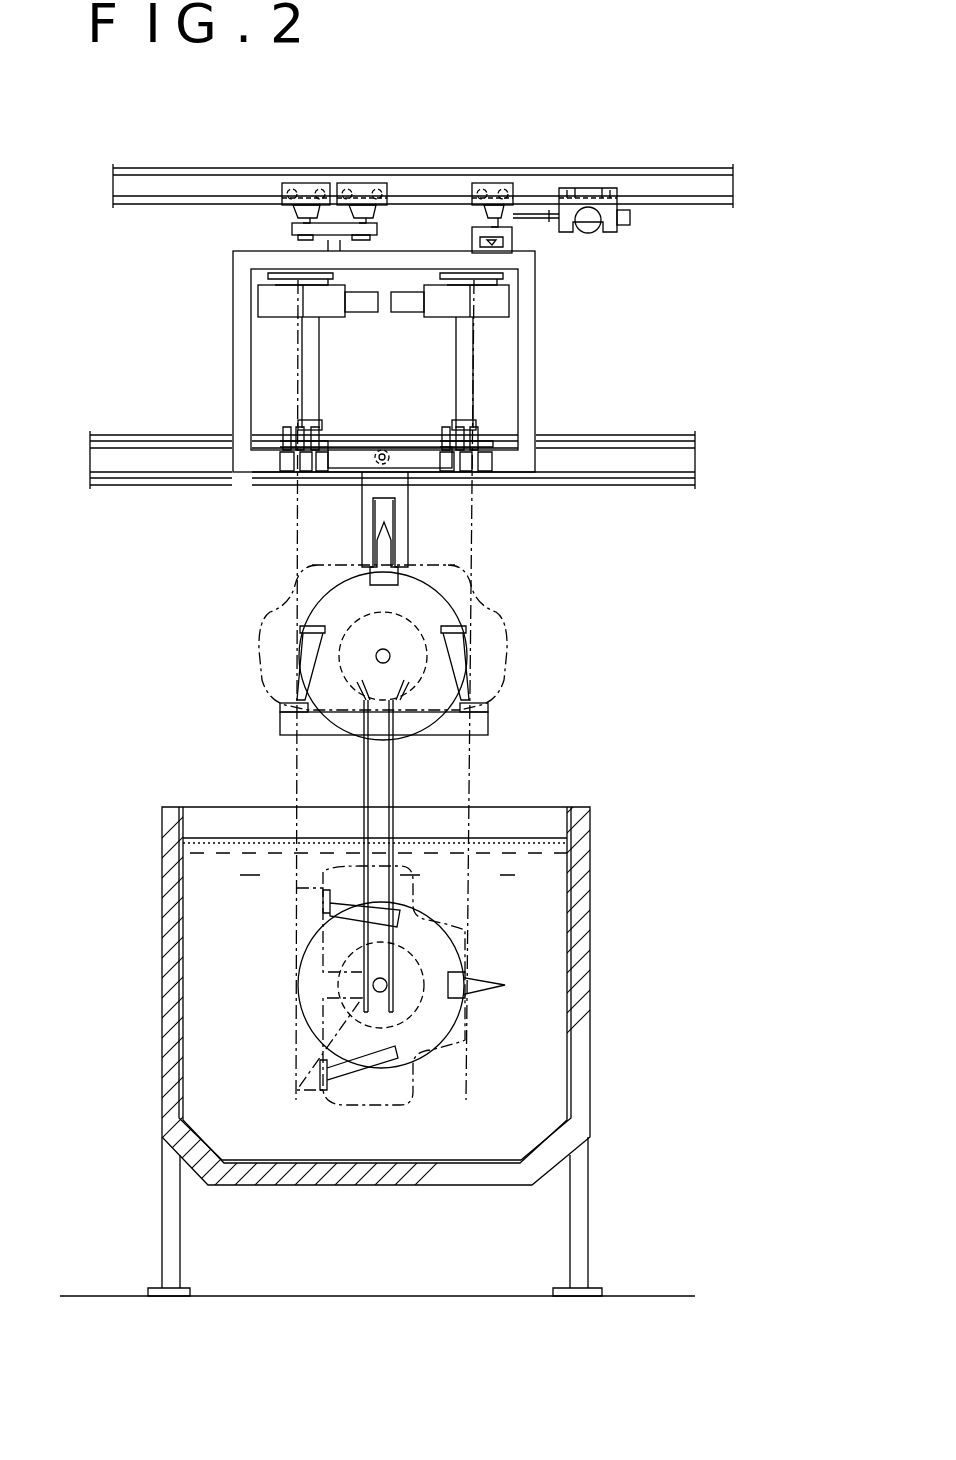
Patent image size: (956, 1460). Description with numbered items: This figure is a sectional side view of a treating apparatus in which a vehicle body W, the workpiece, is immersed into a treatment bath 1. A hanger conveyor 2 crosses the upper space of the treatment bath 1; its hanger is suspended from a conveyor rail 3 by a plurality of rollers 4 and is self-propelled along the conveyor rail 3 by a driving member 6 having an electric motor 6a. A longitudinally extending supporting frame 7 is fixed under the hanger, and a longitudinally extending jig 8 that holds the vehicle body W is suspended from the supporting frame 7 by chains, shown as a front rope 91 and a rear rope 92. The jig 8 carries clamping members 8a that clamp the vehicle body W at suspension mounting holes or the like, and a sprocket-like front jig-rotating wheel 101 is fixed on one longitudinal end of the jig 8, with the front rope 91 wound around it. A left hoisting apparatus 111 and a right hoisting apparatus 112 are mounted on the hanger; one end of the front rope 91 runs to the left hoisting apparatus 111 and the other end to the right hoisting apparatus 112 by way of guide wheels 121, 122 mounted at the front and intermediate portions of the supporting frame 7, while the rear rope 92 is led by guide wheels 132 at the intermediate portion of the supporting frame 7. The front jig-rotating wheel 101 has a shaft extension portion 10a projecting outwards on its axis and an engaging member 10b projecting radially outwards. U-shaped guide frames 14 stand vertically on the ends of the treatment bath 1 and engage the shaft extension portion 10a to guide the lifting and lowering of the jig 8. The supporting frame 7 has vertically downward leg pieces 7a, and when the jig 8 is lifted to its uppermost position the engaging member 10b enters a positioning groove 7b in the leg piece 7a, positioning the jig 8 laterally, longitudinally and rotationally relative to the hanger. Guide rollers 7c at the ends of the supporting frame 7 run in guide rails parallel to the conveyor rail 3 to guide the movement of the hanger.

The treatment bath 1 is at (165, 975).
The hanger conveyor 2 is at (393, 158).
The conveyor rail 3 is at (130, 185).
The rollers 4 is at (503, 188).
The driving member 6 is at (585, 195).
The electric motor 6a is at (592, 230).
The supporting frame 7 is at (350, 457).
The leg pieces 7a is at (368, 487).
The positioning groove 7b is at (378, 527).
The guide rollers 7c is at (388, 455).
The jig 8 is at (285, 722).
The clamping members 8a is at (300, 627).
The front rope 91 is at (480, 540).
The rear rope 92 is at (456, 355).
The front jig-rotating wheel 101 is at (437, 600).
The shaft extension portion 10a is at (383, 652).
The engaging member 10b is at (390, 543).
The left hoisting apparatus 111 is at (275, 297).
The right hoisting apparatus 112 is at (500, 300).
The guide wheels 121 is at (476, 470).
The guide wheels 122 is at (472, 427).
The guide wheels 132 is at (452, 415).
The guide frames 14 is at (365, 800).
The vehicle body W is at (490, 675).